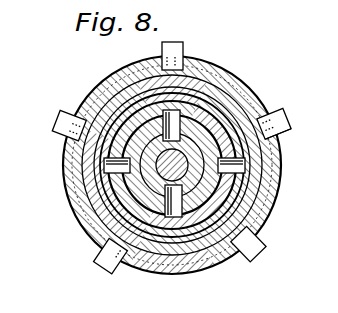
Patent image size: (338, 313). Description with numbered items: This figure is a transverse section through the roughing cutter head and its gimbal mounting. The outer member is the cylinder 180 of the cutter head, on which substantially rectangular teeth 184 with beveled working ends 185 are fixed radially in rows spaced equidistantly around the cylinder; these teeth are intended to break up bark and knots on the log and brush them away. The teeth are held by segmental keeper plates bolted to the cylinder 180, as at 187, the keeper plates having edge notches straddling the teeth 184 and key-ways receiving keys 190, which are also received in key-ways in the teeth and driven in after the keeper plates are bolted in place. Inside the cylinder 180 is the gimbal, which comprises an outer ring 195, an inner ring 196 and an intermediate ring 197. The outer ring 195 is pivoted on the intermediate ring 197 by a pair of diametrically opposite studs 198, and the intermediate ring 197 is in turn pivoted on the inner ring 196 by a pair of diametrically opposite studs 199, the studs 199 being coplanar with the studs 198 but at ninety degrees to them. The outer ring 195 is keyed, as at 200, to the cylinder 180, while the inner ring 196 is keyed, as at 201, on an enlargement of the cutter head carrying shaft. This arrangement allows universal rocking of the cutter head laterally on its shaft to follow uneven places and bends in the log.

The cylinder 180 is at (85, 190).
The teeth 184 is at (274, 106).
The beveled working ends 185 is at (291, 126).
The bolts 187 is at (133, 270).
The keys 190 is at (270, 107).
The outer ring 195 is at (277, 195).
The inner ring 196 is at (97, 222).
The intermediate ring 197 is at (185, 190).
The studs 198 is at (104, 164).
The studs 199 is at (116, 87).
The key 200 is at (217, 112).
The key 201 is at (182, 150).